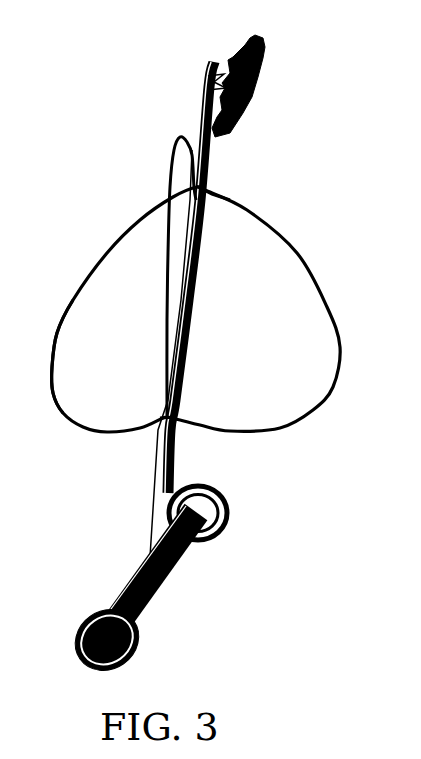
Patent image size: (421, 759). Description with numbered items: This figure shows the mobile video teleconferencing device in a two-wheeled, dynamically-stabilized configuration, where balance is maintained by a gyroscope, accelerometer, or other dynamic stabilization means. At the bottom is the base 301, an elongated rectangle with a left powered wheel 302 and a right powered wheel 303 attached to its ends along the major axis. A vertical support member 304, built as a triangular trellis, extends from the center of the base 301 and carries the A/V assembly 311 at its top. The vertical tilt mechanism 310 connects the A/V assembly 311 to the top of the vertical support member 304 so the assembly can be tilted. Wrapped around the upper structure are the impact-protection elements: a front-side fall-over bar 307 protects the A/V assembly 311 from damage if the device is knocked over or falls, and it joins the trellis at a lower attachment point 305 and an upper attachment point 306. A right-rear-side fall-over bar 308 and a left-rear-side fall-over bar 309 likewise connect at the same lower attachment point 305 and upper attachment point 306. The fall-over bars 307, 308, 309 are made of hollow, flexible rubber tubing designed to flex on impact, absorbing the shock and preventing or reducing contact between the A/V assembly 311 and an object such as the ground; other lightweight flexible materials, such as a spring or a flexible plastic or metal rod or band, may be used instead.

The base 301 is at (150, 583).
The left powered wheel 302 is at (228, 513).
The right powered wheel 303 is at (143, 650).
The vertical support member 304 is at (177, 443).
The lower attachment point 305 is at (163, 423).
The upper attachment point 306 is at (207, 183).
The front-side fall-over bar 307 is at (303, 258).
The right-rear-side fall-over bar 308 is at (55, 400).
The left-rear-side fall-over bar 309 is at (107, 252).
The vertical tilt mechanism 310 is at (218, 72).
The A/V assembly 311 is at (257, 85).